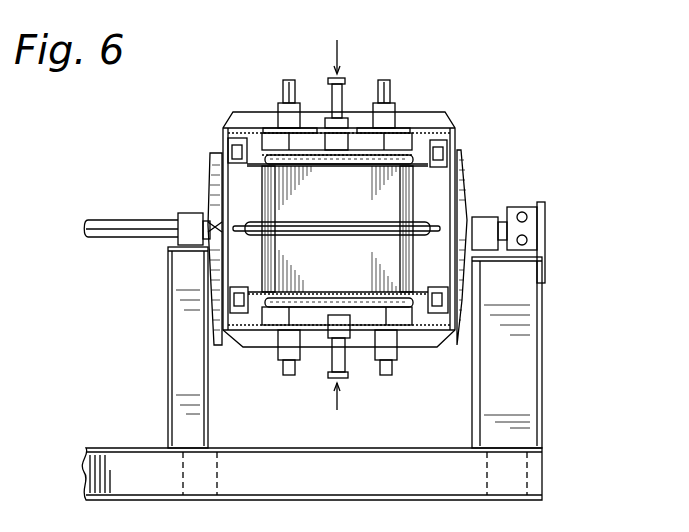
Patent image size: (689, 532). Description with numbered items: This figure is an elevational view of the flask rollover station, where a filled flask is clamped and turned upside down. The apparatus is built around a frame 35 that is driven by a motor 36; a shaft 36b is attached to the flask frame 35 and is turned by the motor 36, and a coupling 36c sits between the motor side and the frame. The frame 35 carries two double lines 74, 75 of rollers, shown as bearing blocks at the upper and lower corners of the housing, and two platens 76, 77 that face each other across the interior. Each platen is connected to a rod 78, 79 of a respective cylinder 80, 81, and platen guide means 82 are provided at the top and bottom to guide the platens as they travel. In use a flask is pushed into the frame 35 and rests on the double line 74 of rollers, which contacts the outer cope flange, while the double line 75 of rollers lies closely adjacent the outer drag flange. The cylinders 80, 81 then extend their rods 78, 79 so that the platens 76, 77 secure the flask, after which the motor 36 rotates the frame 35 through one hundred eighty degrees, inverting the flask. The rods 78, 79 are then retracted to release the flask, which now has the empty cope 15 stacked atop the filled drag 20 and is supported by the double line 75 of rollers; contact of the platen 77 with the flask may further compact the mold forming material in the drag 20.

The cope 15 is at (346, 259).
The drag 20 is at (347, 203).
The frame 35 is at (462, 187).
The motor 36 is at (540, 212).
The shaft 36b is at (130, 198).
The coupling 36c is at (505, 220).
The double line of rollers 74 is at (250, 333).
The double line of rollers 75 is at (245, 143).
The platen 76 is at (305, 305).
The platen 77 is at (305, 150).
The rod 78 is at (355, 343).
The rod 79 is at (338, 128).
The cylinder 80 is at (334, 360).
The cylinder 81 is at (332, 94).
The platen guide means 82 is at (280, 91).